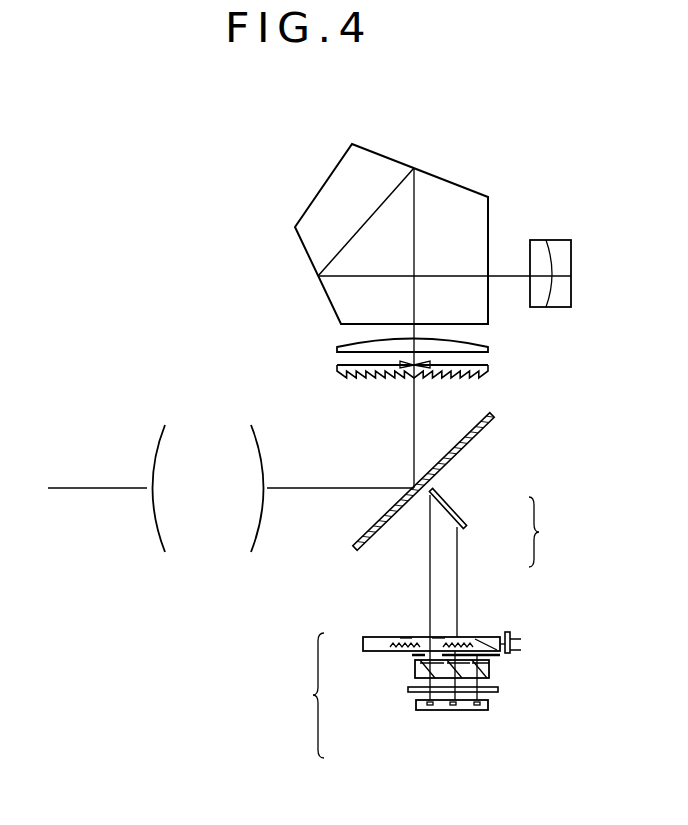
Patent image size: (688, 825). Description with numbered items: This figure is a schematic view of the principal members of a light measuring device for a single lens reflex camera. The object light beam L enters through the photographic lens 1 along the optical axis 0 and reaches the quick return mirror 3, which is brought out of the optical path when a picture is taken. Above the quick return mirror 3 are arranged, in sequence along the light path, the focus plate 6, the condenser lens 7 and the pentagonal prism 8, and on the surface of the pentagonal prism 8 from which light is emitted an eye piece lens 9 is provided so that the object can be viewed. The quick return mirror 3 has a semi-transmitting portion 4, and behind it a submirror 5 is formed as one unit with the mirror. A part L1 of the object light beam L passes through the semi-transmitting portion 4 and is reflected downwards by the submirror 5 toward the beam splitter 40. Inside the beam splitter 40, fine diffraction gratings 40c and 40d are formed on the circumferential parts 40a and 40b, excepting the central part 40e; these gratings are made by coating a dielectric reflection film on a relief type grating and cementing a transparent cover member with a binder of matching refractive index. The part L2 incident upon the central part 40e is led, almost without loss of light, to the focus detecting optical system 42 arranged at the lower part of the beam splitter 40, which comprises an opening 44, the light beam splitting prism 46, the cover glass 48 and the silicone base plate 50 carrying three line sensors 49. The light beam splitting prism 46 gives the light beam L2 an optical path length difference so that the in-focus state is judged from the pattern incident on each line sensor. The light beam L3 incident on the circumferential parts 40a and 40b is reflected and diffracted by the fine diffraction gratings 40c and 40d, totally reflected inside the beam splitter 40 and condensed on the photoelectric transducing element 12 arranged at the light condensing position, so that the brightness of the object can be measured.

The optical axis 0 is at (87, 490).
The photographic lens 1 is at (192, 435).
The quick return mirror 3 is at (492, 418).
The semi-transmitting portion 4 is at (437, 481).
The submirror 5 is at (452, 500).
The focus plate 6 is at (337, 366).
The condenser lens 7 is at (337, 348).
The pentagonal prism 8 is at (382, 163).
The eye piece lens 9 is at (558, 250).
The photoelectric transducing element 12 is at (521, 642).
The beam splitter 40 is at (362, 640).
The circumferential part 40a is at (392, 640).
The circumferential part 40b is at (490, 642).
The fine diffraction grating 40c is at (405, 640).
The fine diffraction grating 40d is at (457, 642).
The central part 40e is at (438, 642).
The focus detecting optical system 42 is at (392, 701).
The opening 44 is at (413, 657).
The light beam splitting prism 46 is at (415, 670).
The cover glass 48 is at (408, 690).
The line sensors 49 is at (477, 710).
The silicone base plate 50 is at (416, 705).
The object light beam L is at (340, 487).
The light beam for light measurement L1 is at (544, 532).
The light beam L2 is at (431, 543).
The light beam L3 is at (457, 563).